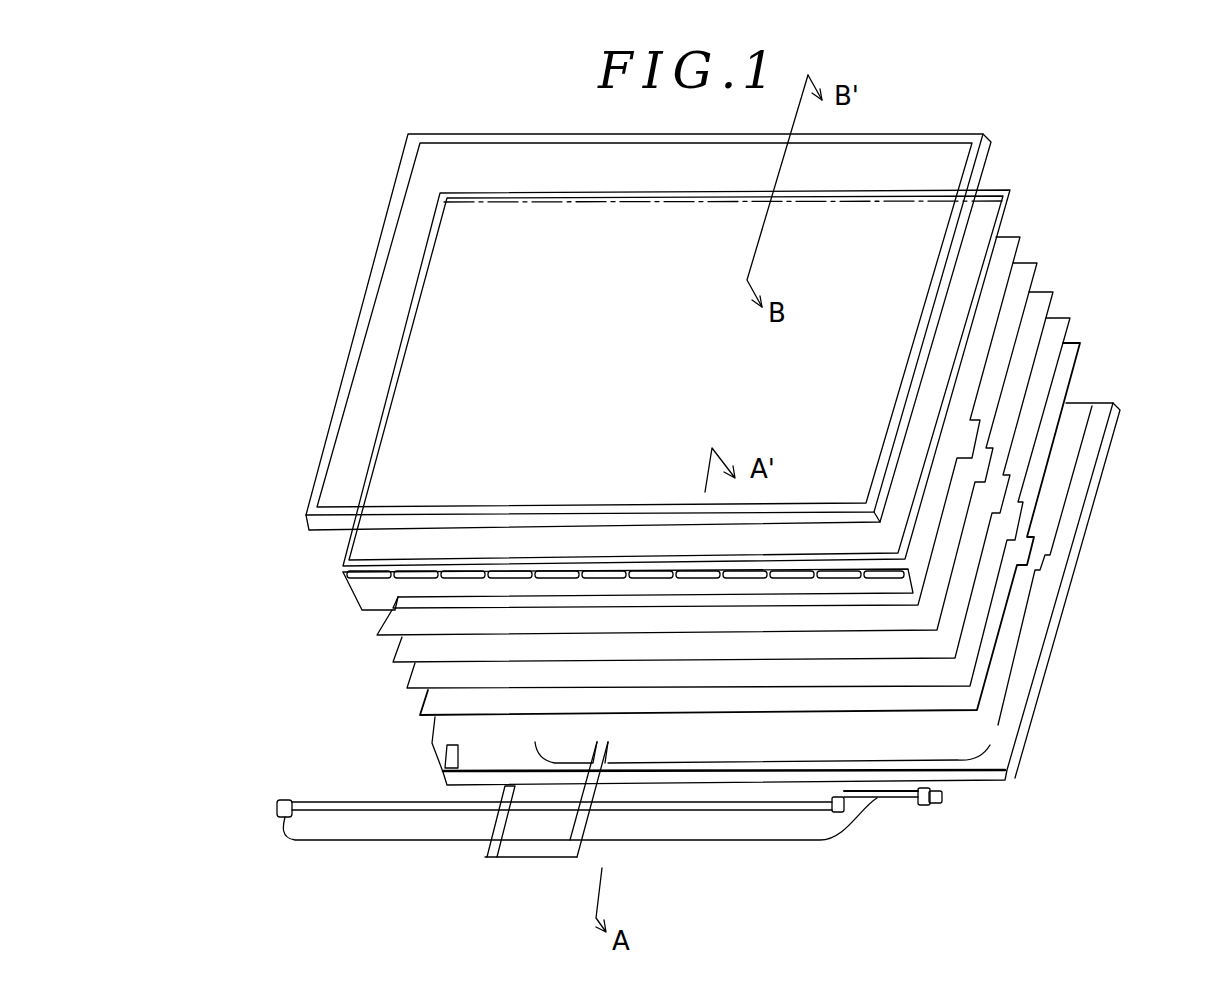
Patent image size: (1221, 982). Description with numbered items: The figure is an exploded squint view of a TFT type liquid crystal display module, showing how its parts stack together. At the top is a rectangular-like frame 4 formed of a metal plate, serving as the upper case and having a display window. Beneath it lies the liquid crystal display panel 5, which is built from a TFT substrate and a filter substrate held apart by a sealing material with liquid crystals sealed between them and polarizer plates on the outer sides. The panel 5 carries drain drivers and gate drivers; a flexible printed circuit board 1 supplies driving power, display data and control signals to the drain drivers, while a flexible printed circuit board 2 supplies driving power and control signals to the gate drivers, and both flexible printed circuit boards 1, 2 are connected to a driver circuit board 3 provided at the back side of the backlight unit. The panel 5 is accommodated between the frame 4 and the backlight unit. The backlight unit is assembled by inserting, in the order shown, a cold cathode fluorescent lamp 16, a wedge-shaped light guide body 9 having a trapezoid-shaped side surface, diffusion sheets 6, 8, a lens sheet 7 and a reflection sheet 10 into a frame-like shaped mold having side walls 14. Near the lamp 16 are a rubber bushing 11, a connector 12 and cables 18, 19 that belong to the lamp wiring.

The flexible printed circuit board 1 is at (355, 598).
The flexible printed circuit board 2 is at (338, 548).
The driver circuit board 3 is at (500, 800).
The frame 4 is at (335, 400).
The liquid crystal display panel 5 is at (417, 447).
The diffusion sheet 6 is at (1022, 245).
The lens sheet 7 is at (1062, 298).
The diffusion sheet 8 is at (1085, 328).
The wedge-shaped light guide body 9 is at (1090, 355).
The reflection sheet 10 is at (1095, 386).
The rubber bushing 11 is at (847, 812).
The connector 12 is at (950, 798).
The mold having side walls 14 is at (1110, 452).
The cold cathode fluorescent lamp 16 is at (786, 838).
The cable 18 is at (877, 800).
The cable 19 is at (705, 840).